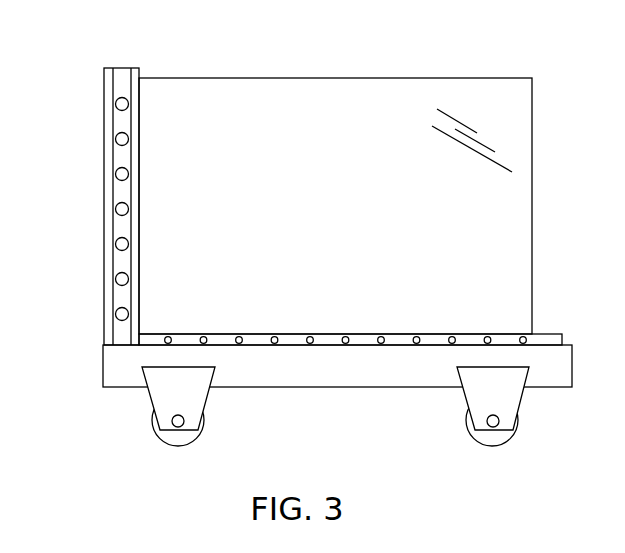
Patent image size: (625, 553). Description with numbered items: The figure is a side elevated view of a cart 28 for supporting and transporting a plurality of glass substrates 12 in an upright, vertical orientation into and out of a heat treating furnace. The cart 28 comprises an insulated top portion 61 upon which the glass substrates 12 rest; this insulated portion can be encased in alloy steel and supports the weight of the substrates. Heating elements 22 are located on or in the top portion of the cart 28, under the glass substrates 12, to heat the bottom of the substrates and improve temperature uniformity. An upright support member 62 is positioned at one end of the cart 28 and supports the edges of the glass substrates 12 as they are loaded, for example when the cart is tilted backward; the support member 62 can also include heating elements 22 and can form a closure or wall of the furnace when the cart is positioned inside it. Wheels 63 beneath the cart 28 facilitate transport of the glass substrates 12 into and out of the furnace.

The glass substrate 12 is at (497, 78).
The heating elements 22 is at (115, 140).
The cart 28 is at (70, 315).
The insulated top portion 61 is at (562, 340).
The upright support member 62 is at (104, 89).
The wheels 63 is at (155, 432).